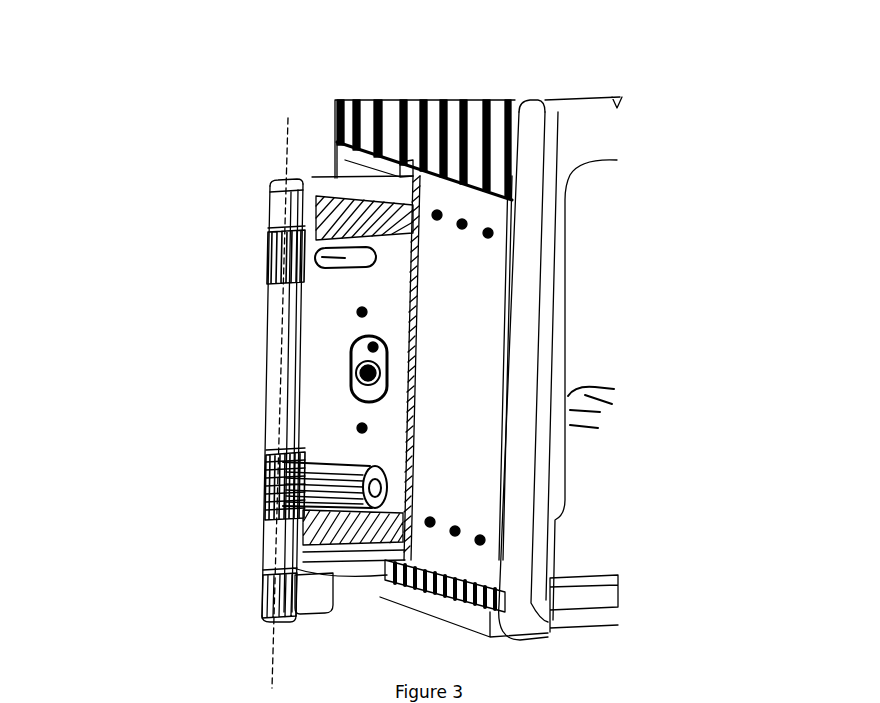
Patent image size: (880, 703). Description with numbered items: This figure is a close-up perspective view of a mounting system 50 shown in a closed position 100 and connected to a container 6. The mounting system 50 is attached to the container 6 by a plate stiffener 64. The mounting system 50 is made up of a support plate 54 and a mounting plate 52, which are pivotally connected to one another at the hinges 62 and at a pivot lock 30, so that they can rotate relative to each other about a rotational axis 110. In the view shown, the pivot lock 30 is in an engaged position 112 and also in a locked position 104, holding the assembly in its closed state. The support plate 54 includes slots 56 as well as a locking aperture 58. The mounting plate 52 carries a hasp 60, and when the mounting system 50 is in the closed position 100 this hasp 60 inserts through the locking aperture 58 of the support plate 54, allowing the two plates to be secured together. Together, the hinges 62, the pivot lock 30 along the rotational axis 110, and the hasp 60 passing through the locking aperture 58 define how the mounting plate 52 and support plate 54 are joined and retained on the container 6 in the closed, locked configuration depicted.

The container 6 is at (684, 192).
The pivot lock 30 is at (290, 512).
The mounting system 50 is at (214, 160).
The mounting plate 52 is at (268, 323).
The support plate 54 is at (396, 276).
The slots 56 is at (290, 266).
The locking aperture 58 is at (389, 342).
The hasp 60 is at (368, 372).
The hinges 62 is at (283, 194).
The plate stiffener 64 is at (358, 210).
The closed position 100 is at (228, 112).
The locked position 104 is at (237, 494).
The rotational axis 110 is at (261, 644).
The engaged position 112 is at (403, 485).